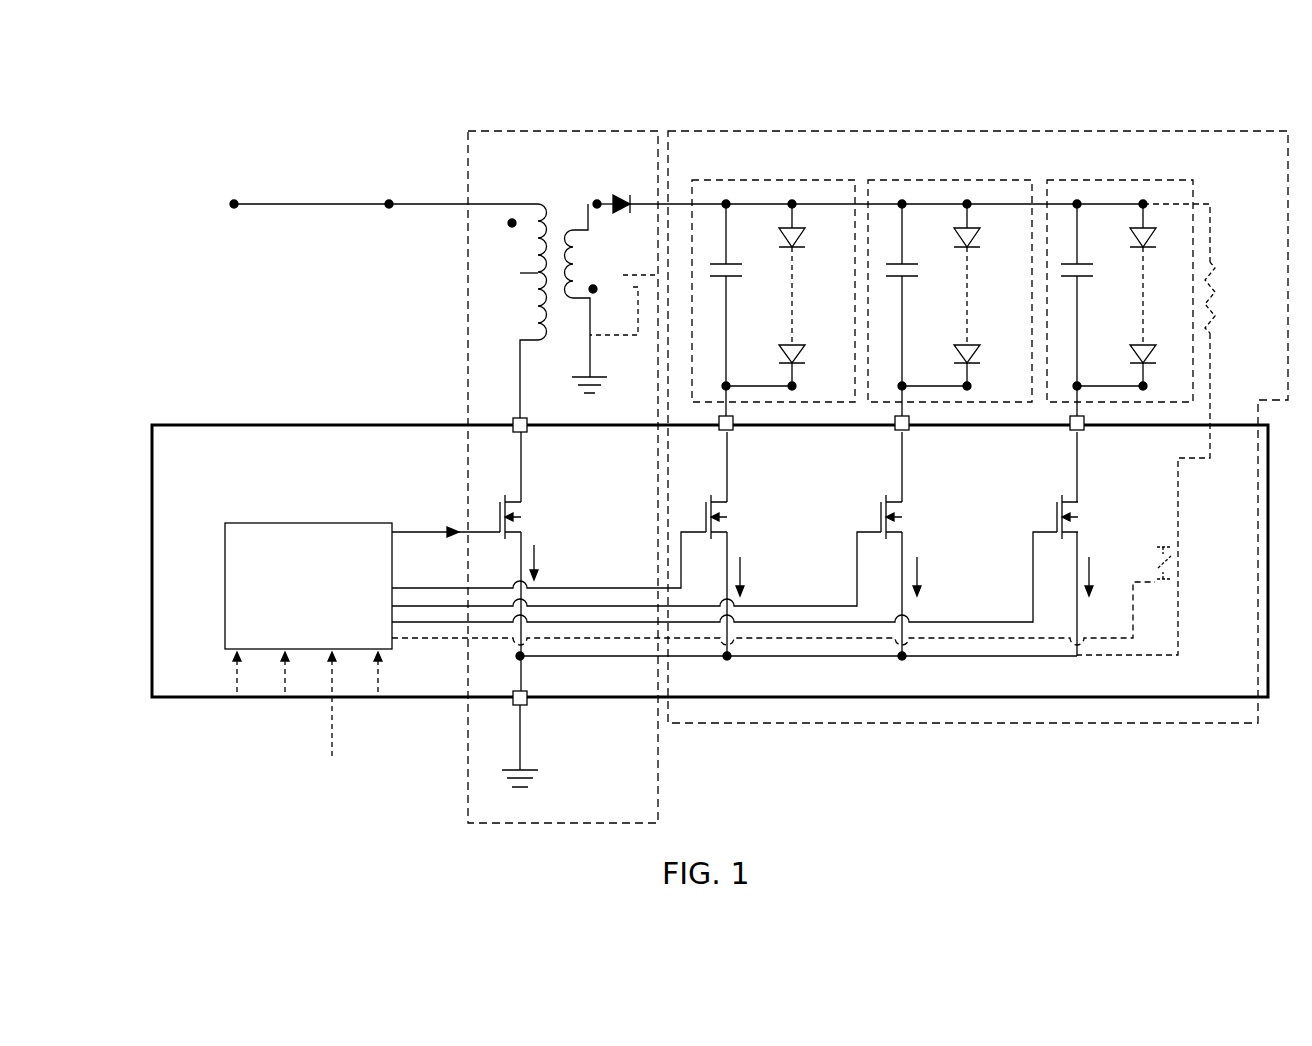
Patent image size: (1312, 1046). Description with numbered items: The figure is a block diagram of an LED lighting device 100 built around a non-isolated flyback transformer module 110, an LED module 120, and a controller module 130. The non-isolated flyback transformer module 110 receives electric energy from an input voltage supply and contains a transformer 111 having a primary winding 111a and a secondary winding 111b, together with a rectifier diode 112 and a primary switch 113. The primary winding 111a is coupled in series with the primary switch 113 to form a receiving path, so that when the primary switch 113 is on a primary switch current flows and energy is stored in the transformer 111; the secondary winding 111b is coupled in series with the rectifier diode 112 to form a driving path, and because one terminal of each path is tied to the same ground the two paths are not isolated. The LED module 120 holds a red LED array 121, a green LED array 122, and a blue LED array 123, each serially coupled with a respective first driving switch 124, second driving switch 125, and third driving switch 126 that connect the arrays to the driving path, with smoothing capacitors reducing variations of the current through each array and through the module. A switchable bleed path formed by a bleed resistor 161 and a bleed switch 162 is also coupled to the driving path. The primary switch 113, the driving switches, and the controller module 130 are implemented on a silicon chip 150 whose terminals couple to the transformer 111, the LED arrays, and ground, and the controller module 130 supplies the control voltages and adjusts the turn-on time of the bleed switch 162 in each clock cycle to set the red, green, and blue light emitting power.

The LED lighting device 100 is at (194, 137).
The non-isolated flyback transformer module 110 is at (468, 145).
The transformer 111 is at (566, 279).
The primary winding 111a is at (538, 300).
The secondary winding 111b is at (573, 254).
The rectifier diode 112 is at (621, 192).
The primary switch 113 is at (523, 523).
The LED module 120 is at (700, 124).
The red LED array 121 is at (797, 178).
The green LED array 122 is at (984, 178).
The blue LED array 123 is at (1132, 178).
The first driving switch 124 is at (729, 523).
The second driving switch 125 is at (904, 519).
The third driving switch 126 is at (1079, 519).
The controller module 130 is at (293, 604).
The silicon chip 150 is at (283, 423).
The bleed resistor 161 is at (1219, 270).
The bleed switch 162 is at (1180, 557).